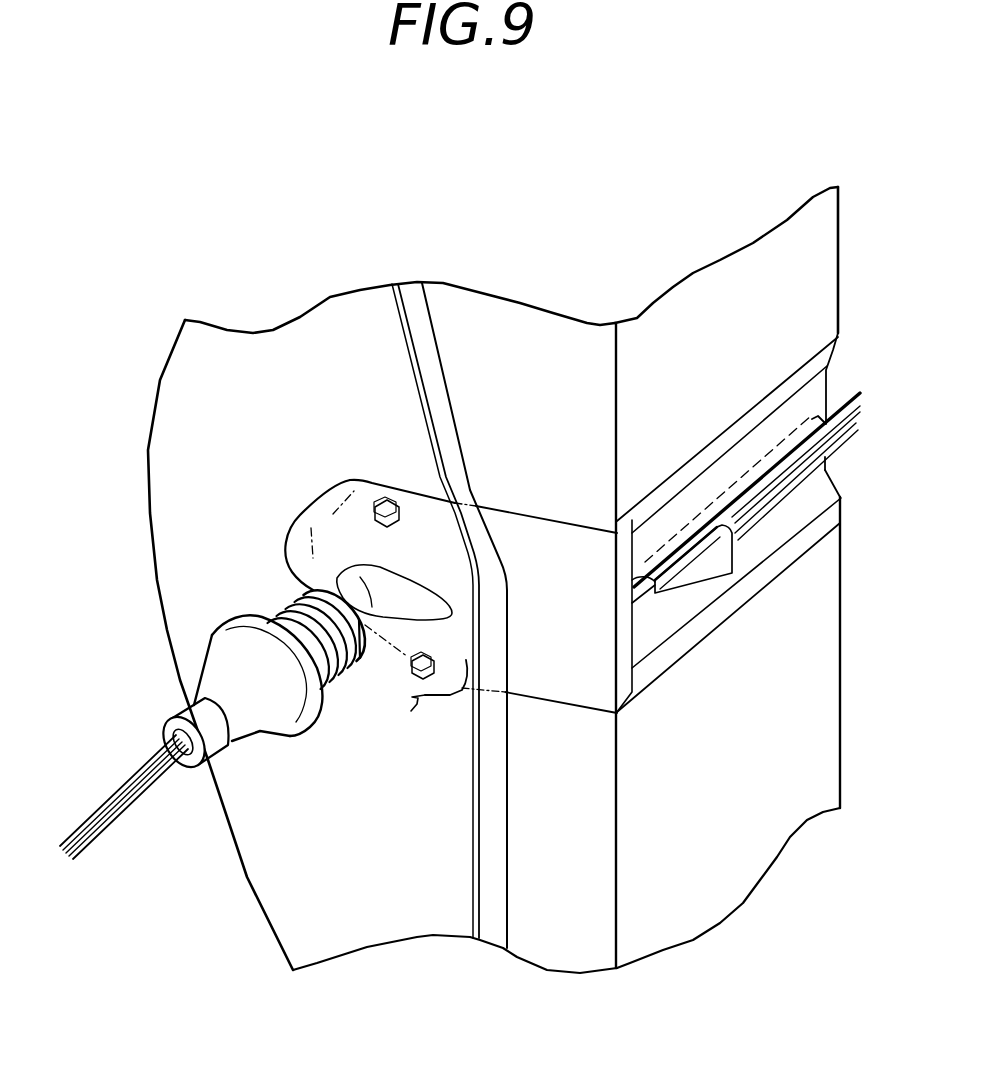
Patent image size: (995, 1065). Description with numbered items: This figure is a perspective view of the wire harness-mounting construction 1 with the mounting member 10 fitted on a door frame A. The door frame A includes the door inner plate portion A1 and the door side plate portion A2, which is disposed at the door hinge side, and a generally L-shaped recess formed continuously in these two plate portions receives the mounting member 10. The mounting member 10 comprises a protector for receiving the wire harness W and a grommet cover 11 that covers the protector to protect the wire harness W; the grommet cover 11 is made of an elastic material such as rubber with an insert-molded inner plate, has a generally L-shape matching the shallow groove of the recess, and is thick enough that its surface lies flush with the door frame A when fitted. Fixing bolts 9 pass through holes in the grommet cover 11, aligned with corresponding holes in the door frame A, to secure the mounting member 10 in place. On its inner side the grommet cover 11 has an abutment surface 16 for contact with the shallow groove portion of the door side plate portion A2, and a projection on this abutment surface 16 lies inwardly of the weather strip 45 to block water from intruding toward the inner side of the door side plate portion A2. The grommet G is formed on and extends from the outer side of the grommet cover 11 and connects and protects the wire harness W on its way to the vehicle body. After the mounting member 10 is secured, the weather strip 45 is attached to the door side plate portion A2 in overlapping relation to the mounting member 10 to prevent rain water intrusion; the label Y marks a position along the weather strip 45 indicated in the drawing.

The wire harness-mounting construction 1 is at (100, 346).
The fixing bolt 9 is at (372, 503).
The mounting member 10 is at (303, 547).
The grommet cover 11 is at (335, 512).
The abutment surface 16 is at (416, 704).
The weather strip 45 is at (407, 317).
The door frame A is at (840, 241).
The door inner plate portion A1 is at (807, 332).
The door side plate portion A2 is at (272, 360).
The grommet G is at (210, 677).
The wire harness W is at (110, 808).
The ridge position Y is at (358, 391).